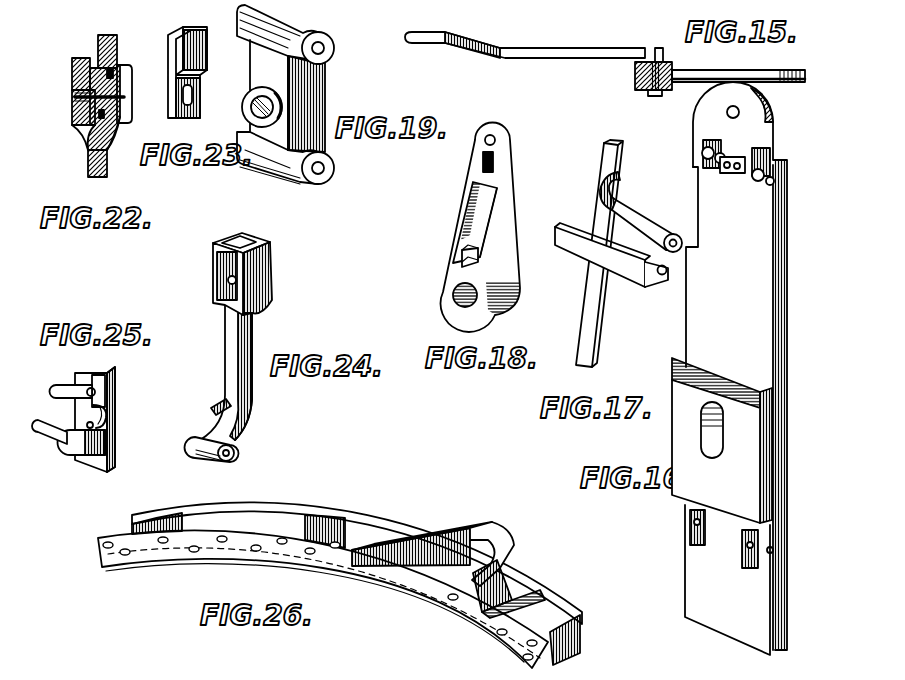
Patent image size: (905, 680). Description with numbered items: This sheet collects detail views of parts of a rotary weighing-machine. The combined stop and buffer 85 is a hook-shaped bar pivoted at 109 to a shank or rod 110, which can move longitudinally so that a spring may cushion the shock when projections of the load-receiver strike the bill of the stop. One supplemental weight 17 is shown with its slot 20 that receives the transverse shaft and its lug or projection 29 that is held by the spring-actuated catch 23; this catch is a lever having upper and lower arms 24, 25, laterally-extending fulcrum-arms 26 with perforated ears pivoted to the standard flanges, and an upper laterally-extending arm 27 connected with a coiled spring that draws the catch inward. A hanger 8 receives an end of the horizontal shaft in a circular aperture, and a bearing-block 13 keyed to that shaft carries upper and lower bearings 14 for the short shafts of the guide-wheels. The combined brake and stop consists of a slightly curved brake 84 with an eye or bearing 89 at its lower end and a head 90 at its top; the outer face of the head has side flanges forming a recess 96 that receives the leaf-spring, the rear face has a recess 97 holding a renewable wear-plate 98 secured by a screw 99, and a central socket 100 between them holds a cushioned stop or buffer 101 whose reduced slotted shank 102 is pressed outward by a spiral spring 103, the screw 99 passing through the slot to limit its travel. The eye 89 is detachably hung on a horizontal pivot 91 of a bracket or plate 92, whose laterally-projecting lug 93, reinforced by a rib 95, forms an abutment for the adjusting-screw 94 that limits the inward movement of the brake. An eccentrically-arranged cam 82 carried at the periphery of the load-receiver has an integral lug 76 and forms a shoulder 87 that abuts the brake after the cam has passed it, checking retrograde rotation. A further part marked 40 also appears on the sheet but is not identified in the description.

In FIG. 18, the hangers 8 is at (455, 245).
In FIG. 19, the bearing-blocks 13 is at (310, 82).
In FIG. 19, the upper and lower bearings 14 is at (323, 42).
In FIG. 16, the supplemental weights 17 is at (700, 578).
In FIG. 16, the slot 20 is at (714, 460).
In FIG. 17, the spring-actuated catches 23 is at (605, 163).
In FIG. 17, the upper arm 24 is at (618, 167).
In FIG. 17, the lower arm 25 is at (588, 313).
In FIG. 17, the fulcrum-arms 26 is at (580, 243).
In FIG. 17, the upper laterally-extending arm 27 is at (648, 222).
In FIG. 16, the lug or projection 29 is at (733, 175).
In FIG. 22, the frame 40 is at (29, 8).
In FIG. 26, the lugs 76 is at (500, 550).
In FIG. 26, the eccentrically-arranged cams 82 is at (540, 600).
In FIG. 22, the brakes 84 is at (93, 160).
In FIG. 24, the brakes 84 is at (225, 360).
In FIG. 15, the combined stop and buffer 85 is at (521, 54).
In FIG. 26, the shoulders 87 is at (572, 636).
In FIG. 24, the eye or bearing 89 is at (235, 453).
In FIG. 22, the head 90 is at (121, 120).
In FIG. 24, the head 90 is at (262, 277).
In FIG. 25, the horizontal pivot 91 is at (53, 433).
In FIG. 25, the bracket or plate 92 is at (112, 428).
In FIG. 25, the laterally-projecting lug 93 is at (55, 387).
In FIG. 24, the adjusting-screw 94 is at (212, 405).
In FIG. 25, the rib 95 is at (68, 398).
In FIG. 22, the recess 96 is at (131, 80).
In FIG. 24, the recess 96 is at (258, 238).
In FIG. 22, the recess 97 is at (72, 102).
In FIG. 24, the recess 97 is at (214, 252).
In FIG. 22, the wear-plate 98 is at (72, 64).
In FIG. 22, the screw 99 is at (124, 98).
In FIG. 22, the central socket 100 is at (100, 120).
In FIG. 24, the central socket 100 is at (232, 240).
In FIG. 22, the cushioned stop or buffer 101 is at (117, 40).
In FIG. 23, the cushioned stop or buffer 101 is at (186, 33).
In FIG. 22, the reduced slotted shank 102 is at (99, 113).
In FIG. 23, the reduced slotted shank 102 is at (193, 97).
In FIG. 22, the spiral spring 103 is at (113, 73).
In FIG. 15, the pivot 109 is at (638, 78).
In FIG. 15, the shank or rod 110 is at (742, 66).